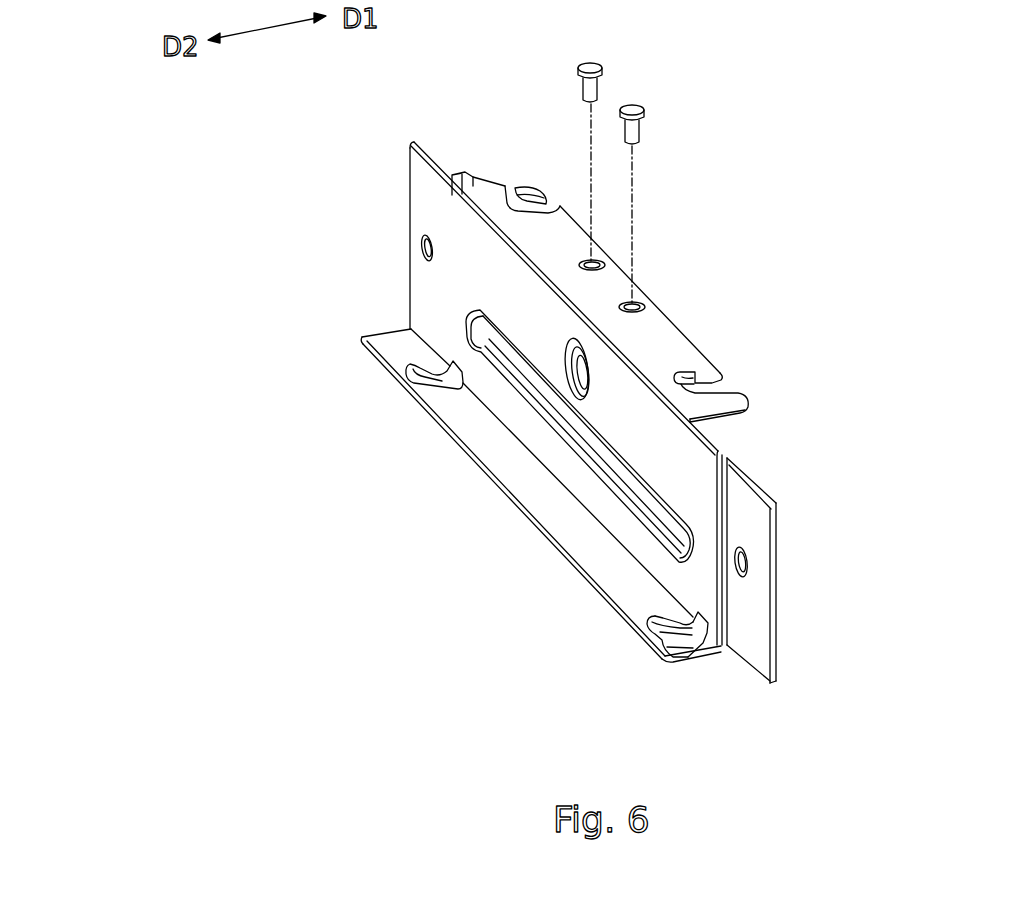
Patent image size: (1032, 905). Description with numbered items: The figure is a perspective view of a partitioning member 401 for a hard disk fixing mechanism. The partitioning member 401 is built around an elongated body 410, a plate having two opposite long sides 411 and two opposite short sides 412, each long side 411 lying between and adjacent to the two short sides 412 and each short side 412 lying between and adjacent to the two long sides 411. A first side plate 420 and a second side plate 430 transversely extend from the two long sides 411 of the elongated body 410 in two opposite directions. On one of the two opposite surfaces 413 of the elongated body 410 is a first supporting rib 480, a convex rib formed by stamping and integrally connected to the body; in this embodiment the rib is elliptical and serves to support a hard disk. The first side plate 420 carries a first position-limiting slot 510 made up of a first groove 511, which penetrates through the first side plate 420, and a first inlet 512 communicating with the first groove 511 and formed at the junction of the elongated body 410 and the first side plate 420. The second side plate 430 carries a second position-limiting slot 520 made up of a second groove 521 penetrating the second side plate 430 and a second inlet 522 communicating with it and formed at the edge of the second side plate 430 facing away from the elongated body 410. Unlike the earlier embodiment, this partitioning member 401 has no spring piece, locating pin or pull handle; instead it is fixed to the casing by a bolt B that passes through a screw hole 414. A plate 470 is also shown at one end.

The partitioning member 401 is at (1006, 113).
The elongated body 410 is at (404, 240).
The long sides 411 is at (520, 253).
The short sides 412 is at (409, 196).
The opposite surfaces 413 is at (700, 460).
The screw hole 414 is at (606, 261).
The first side plate 420 is at (463, 432).
The second side plate 430 is at (699, 336).
The mounting plate 470 is at (772, 593).
The first supporting rib 480 is at (568, 441).
The first position-limiting slot 510 is at (680, 699).
The first groove 511 is at (650, 631).
The first inlet 512 is at (694, 640).
The second position-limiting slot 520 is at (642, 184).
The second groove 521 is at (525, 190).
The second inlet 522 is at (547, 202).
The bolt B is at (593, 64).